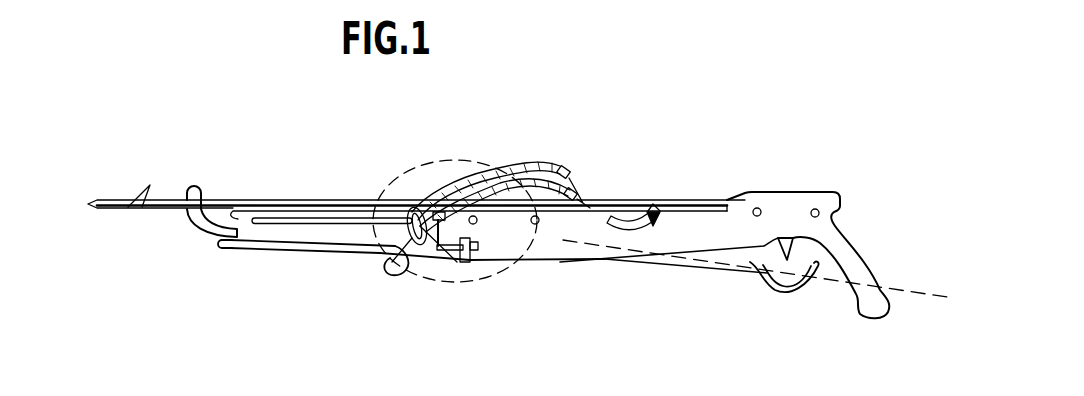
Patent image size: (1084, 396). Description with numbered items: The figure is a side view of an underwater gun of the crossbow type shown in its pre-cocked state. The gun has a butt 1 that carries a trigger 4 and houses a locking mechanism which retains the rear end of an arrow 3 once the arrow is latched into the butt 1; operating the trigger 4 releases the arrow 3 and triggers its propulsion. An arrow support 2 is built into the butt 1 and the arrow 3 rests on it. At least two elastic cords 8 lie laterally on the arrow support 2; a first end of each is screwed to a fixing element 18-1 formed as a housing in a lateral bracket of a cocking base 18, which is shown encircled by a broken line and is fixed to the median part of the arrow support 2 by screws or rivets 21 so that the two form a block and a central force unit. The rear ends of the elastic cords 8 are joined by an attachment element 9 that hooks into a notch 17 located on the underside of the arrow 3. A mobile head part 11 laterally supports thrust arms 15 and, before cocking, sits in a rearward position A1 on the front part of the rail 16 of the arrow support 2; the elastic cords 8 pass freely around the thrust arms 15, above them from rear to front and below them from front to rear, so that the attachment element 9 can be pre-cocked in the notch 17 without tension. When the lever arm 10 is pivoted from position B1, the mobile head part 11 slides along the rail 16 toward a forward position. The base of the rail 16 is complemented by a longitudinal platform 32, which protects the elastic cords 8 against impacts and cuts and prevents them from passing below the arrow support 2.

The butt 1 is at (797, 220).
The arrow support 2 is at (340, 235).
The arrow 3 is at (223, 203).
The trigger 4 is at (773, 238).
The elastic cords 8 is at (460, 172).
The attachment element 9 is at (587, 190).
The lever arm 10 is at (745, 280).
The mobile head part 11 is at (438, 250).
The thrust arms 15 is at (390, 266).
The rail 16 is at (283, 215).
The notch 17 is at (662, 216).
The cocking base 18 is at (516, 151).
The fixing element 18-1 is at (466, 262).
The screw or rivet 21 is at (474, 225).
The longitudinal platform 32 is at (253, 242).
The rearward position A1 is at (393, 167).
The lever arm position B1 is at (915, 282).